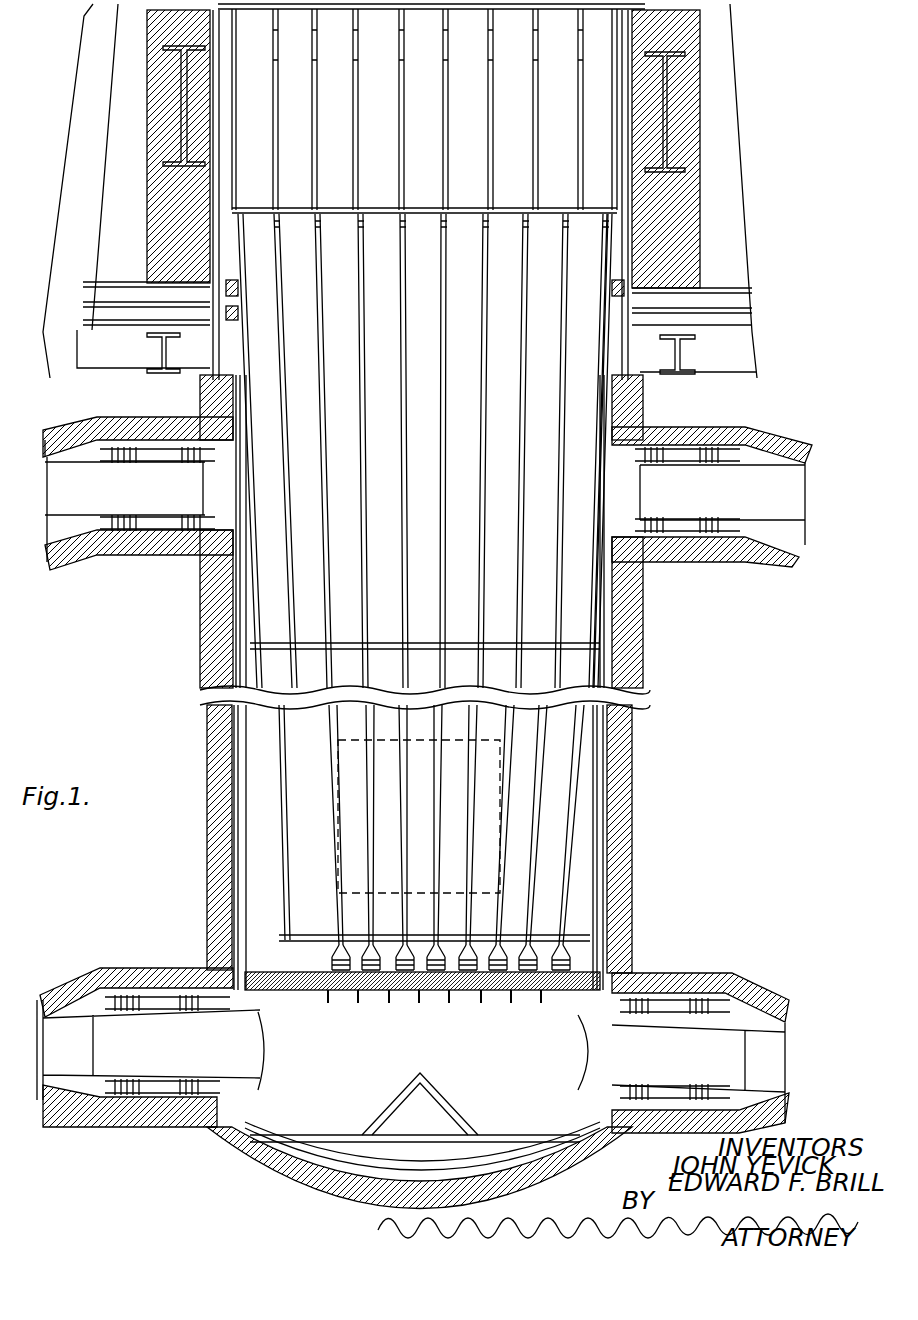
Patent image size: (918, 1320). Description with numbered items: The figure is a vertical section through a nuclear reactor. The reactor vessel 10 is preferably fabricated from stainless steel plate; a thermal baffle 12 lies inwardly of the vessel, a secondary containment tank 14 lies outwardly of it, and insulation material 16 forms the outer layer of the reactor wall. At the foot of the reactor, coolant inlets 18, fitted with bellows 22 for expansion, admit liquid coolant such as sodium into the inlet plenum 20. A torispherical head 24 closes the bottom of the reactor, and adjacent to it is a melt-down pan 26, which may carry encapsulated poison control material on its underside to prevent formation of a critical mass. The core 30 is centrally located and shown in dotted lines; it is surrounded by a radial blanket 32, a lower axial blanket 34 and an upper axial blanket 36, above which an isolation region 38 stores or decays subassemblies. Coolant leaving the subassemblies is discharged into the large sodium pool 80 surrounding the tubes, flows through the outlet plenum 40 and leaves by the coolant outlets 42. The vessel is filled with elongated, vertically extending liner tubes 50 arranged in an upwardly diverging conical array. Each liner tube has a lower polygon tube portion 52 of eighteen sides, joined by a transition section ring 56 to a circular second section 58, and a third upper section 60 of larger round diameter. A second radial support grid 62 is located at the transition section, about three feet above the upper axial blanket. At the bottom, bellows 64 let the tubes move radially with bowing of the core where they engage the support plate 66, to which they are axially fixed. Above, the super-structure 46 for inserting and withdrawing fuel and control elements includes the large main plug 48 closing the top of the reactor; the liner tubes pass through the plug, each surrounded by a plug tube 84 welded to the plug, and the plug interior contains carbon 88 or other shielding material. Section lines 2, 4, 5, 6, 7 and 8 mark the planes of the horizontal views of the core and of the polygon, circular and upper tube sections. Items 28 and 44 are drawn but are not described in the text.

The section line 2— 2 is at (182, 873).
The section line 4— 4 is at (297, 723).
The section line 5— 5 is at (355, 591).
The section line 6— 6 is at (311, 374).
The section line 7— 7 is at (328, 12).
The section line 8— 8 is at (470, 538).
The reactor vessel 10 is at (626, 838).
The thermal baffle 12 is at (626, 803).
The secondary containment tank 14 is at (627, 868).
The insulation material 16 is at (630, 762).
The coolant inlets 18 is at (115, 1040).
The inlet plenum 20 is at (543, 1050).
The bellows 22 is at (185, 995).
The torispherical head 24 is at (270, 1187).
The melt-down pan 26 is at (440, 1096).
The deflector plate 28 is at (398, 1104).
The core 30 is at (484, 834).
The radial blanket 32 is at (285, 815).
The lower axial blanket 34 is at (385, 938).
The upper axial blanket 36 is at (390, 727).
The isolation region 38 is at (500, 662).
The outlet plenum 40 is at (383, 576).
The coolant outlets 42 is at (100, 497).
The upper nozzle bellows 44 is at (133, 445).
The super-structure 46 is at (50, 168).
The main plug 48 is at (616, 128).
The liner tubes 50 is at (381, 472).
The lower polygon tube portion 52 is at (277, 721).
The transition section ring 56 is at (228, 673).
The second section 58 is at (285, 571).
The third upper section 60 is at (276, 55).
The second radial support grid 62 is at (636, 627).
The bellows 64 is at (298, 968).
The support plate 66 is at (438, 980).
The sodium pool 80 is at (246, 552).
The plug tube 84 is at (572, 48).
The carbon 88 is at (632, 250).